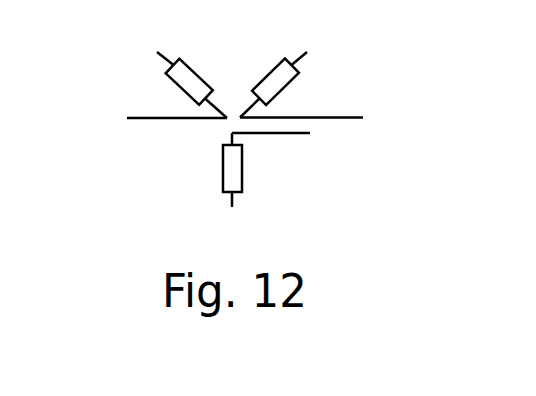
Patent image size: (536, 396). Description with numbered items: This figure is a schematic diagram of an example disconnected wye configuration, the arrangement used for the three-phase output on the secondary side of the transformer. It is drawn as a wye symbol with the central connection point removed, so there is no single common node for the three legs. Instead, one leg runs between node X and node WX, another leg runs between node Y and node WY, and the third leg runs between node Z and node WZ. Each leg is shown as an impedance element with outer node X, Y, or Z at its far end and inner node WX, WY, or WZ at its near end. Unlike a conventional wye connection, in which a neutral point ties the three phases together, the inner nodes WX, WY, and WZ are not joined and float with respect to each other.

The node X is at (184, 75).
The node Y is at (281, 75).
The node Z is at (232, 185).
The node WX is at (159, 116).
The node WY is at (319, 116).
The node WZ is at (288, 134).